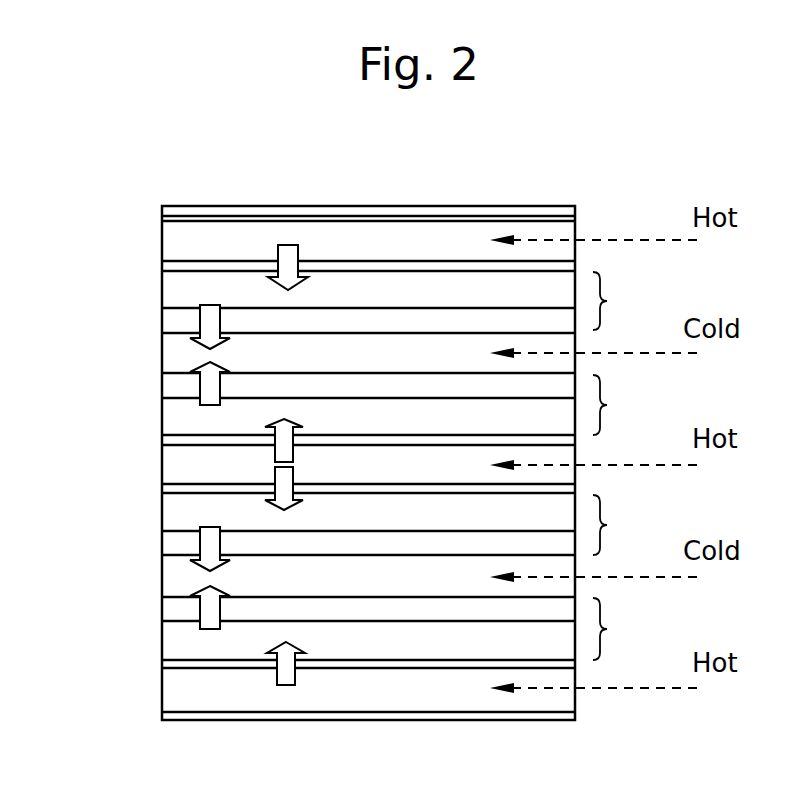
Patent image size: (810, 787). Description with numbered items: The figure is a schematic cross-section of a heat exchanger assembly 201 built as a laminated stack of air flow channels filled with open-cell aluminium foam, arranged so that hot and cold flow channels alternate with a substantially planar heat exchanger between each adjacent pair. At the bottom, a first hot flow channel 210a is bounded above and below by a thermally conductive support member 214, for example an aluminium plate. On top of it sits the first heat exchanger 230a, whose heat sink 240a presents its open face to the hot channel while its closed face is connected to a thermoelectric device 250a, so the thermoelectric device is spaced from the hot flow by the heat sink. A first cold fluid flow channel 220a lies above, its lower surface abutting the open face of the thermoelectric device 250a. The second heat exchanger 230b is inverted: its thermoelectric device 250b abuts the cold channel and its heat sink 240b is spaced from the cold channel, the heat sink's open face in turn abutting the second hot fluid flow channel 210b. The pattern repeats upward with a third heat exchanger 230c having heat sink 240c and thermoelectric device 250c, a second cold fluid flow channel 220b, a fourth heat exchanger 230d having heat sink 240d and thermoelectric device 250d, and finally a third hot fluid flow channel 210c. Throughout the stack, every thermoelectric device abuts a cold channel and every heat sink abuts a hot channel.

The heat exchanger assembly 201 is at (538, 152).
The thermally conductive support member 214 is at (162, 217).
The first hot flow channel 210a is at (430, 700).
The second hot fluid flow channel 210b is at (430, 478).
The third hot fluid flow channel 210c is at (428, 252).
The first cold fluid flow channel 220a is at (430, 589).
The second cold fluid flow channel 220b is at (430, 366).
The first heat exchanger 230a is at (636, 629).
The second heat exchanger 230b is at (636, 525).
The third heat exchanger 230c is at (635, 405).
The fourth heat exchanger 230d is at (636, 301).
The heat sink 240a is at (430, 654).
The heat sink 240b is at (430, 528).
The heat sink 240c is at (428, 428).
The heat sink 240d is at (430, 306).
The thermoelectric device 250a is at (177, 608).
The thermoelectric device 250b is at (177, 543).
The thermoelectric device 250c is at (177, 385).
The thermoelectric device 250d is at (177, 320).